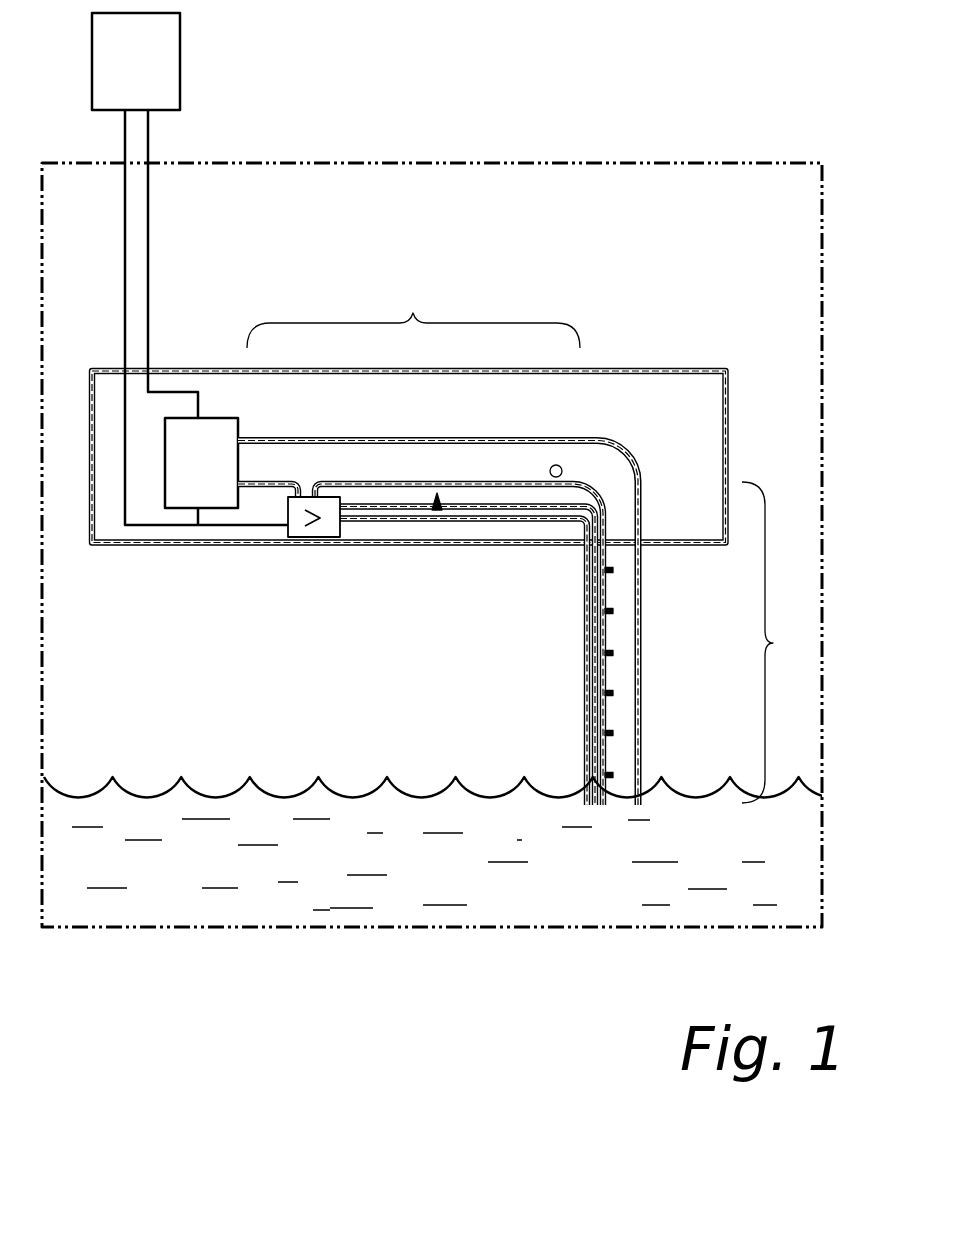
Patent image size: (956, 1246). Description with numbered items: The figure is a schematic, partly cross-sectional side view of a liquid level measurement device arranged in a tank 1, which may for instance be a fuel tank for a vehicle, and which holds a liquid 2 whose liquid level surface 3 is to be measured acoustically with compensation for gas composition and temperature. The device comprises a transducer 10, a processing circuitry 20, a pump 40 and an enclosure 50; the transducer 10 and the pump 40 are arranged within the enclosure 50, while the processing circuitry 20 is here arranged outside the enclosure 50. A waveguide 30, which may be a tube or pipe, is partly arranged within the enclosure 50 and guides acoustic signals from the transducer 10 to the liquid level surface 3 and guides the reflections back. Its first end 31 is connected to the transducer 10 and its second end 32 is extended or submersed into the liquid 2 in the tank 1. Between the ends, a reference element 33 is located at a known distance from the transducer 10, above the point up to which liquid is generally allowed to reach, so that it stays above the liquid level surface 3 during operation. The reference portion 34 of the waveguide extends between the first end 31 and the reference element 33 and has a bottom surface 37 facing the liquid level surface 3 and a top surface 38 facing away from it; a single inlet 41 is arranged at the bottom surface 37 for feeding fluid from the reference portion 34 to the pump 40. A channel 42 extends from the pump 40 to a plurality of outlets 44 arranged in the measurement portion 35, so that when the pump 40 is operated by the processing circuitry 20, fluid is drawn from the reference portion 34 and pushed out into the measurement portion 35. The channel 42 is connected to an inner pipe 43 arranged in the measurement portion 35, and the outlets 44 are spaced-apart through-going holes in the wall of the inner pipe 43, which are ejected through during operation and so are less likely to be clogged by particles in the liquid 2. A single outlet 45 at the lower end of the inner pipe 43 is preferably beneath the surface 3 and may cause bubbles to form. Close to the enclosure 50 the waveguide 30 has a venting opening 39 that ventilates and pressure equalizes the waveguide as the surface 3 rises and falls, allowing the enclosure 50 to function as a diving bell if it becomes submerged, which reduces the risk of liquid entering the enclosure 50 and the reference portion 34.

The tank 1 is at (396, 161).
The liquid 2 is at (593, 905).
The liquid level surface 3 is at (350, 768).
The transducer 10 is at (198, 512).
The processing circuitry 20 is at (162, 66).
The waveguide 30 is at (636, 458).
The first end 31 is at (262, 468).
The second end 32 is at (642, 805).
The reference element 33 is at (556, 477).
The reference portion 34 is at (413, 310).
The measurement portion 35 is at (785, 642).
The bottom surface 37 is at (437, 510).
The top surface 38 is at (446, 418).
The venting opening 39 is at (643, 556).
The pump 40 is at (335, 525).
The inlet 41 is at (300, 493).
The channel 42 is at (493, 510).
The inner pipe 43 is at (608, 677).
The outlets 44 is at (613, 570).
The single outlet 45 is at (597, 806).
The enclosure 50 is at (93, 368).